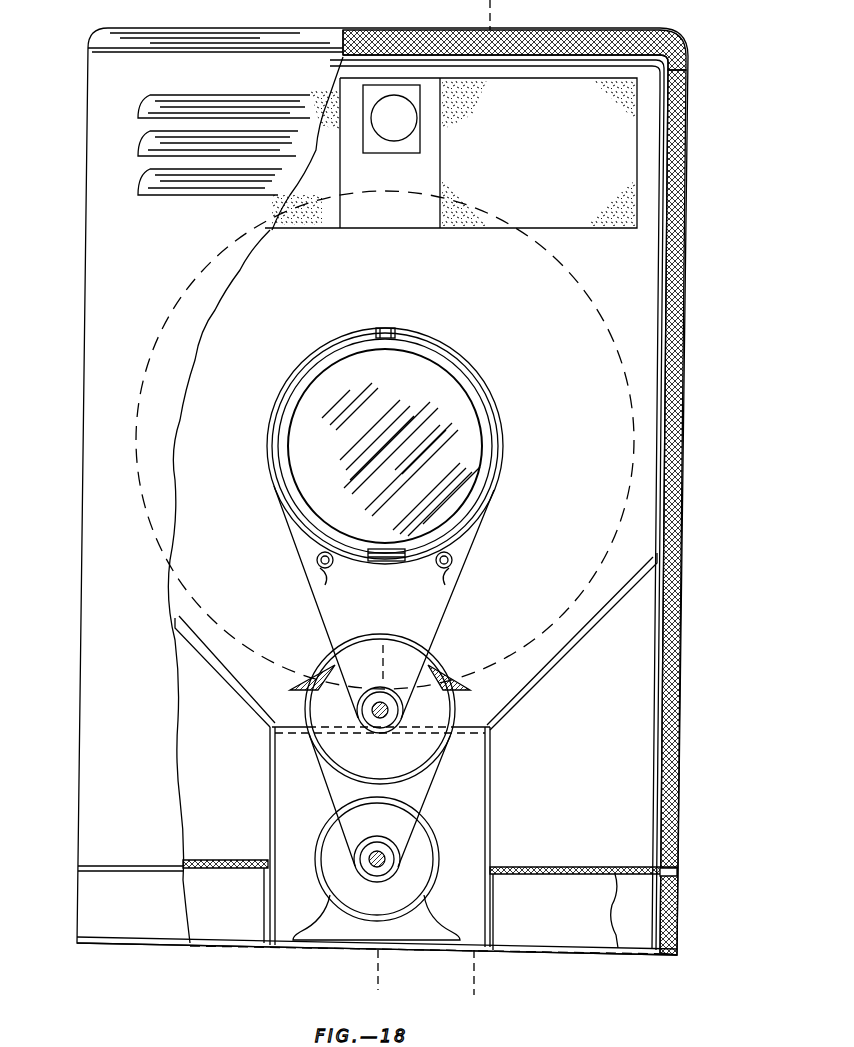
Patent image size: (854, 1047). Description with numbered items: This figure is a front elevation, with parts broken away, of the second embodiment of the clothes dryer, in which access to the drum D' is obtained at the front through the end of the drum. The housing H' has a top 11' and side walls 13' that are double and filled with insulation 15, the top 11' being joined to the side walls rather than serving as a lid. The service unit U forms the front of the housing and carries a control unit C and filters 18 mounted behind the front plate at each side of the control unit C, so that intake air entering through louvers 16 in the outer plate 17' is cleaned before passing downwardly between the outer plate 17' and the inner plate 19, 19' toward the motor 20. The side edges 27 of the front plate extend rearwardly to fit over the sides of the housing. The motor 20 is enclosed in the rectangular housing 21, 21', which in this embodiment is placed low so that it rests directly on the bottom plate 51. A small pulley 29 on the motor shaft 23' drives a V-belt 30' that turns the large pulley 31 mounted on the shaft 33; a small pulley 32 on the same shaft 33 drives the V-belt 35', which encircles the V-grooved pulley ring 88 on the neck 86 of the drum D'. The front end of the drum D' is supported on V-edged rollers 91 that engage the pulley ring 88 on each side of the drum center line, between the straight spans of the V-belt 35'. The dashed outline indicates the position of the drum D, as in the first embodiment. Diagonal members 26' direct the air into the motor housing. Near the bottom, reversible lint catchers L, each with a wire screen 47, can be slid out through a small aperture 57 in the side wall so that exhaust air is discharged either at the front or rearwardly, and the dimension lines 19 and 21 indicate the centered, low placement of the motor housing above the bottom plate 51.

The top 11' is at (382, 477).
The side walls 13' is at (695, 512).
The insulation 15 is at (640, 34).
The louvers 16 is at (199, 198).
The outer plate 17' is at (219, 586).
The filters 18 is at (290, 230).
The inner plate 19 is at (403, 817).
The inner plate 19' is at (487, 705).
The motor 20 is at (440, 846).
The rectangular housing 21 is at (515, 497).
The housing section 21' is at (402, 837).
The motor shaft 23' is at (360, 875).
The inclined chute 26' is at (416, 641).
The side edges 27 is at (657, 690).
The small pulley 29 is at (388, 871).
The V-belt 30' is at (392, 800).
The large pulley 31 is at (396, 635).
The small pulley 32 is at (405, 712).
The shaft 33 is at (379, 714).
The V-belt 35' is at (400, 602).
The wire screen 47 is at (228, 858).
The bottom plate 51 is at (580, 958).
The aperture 57 is at (670, 876).
The neck 86 is at (456, 384).
The pulley ring 88 is at (500, 490).
The rollers 91 is at (333, 573).
The control unit C is at (396, 160).
The drum D is at (281, 691).
The drum D' is at (385, 440).
The housing H' is at (723, 186).
The lint catcher L is at (542, 862).
The service unit U is at (115, 718).